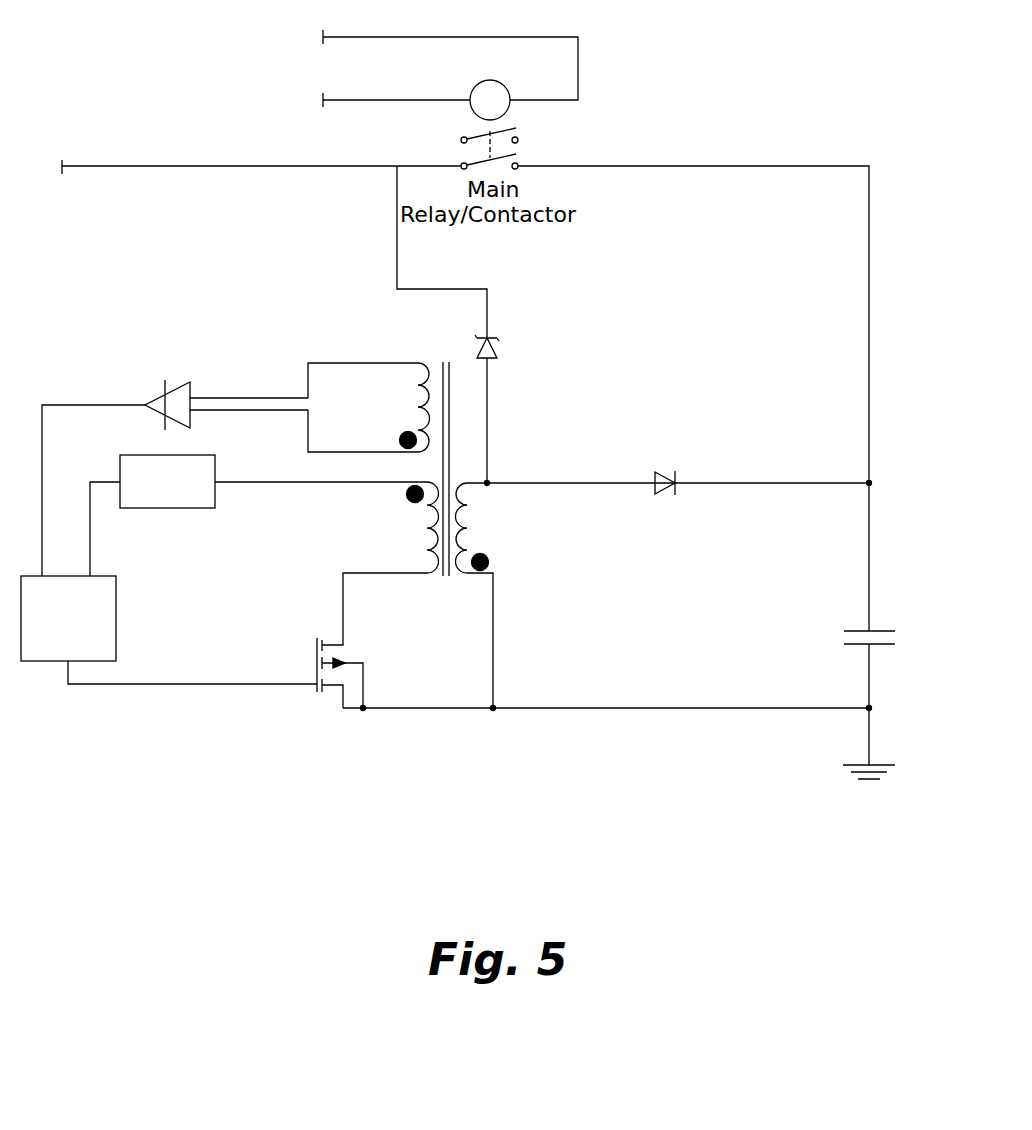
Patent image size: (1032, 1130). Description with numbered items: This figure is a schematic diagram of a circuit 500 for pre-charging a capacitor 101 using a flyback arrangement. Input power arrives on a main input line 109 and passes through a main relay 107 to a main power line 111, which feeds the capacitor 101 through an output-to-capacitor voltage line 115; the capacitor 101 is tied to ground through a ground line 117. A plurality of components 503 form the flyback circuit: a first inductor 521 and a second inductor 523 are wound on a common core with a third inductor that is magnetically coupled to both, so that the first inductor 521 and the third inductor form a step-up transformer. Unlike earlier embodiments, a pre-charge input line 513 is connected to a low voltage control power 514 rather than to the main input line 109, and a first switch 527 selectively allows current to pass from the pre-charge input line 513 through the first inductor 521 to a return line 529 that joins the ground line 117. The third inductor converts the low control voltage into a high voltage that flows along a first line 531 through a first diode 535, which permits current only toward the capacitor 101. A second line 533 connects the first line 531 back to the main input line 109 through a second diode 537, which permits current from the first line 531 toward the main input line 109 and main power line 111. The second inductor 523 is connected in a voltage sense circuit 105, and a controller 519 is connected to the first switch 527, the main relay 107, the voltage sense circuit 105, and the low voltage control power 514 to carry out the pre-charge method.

The circuit 500 is at (149, 12).
The main relay 107 is at (461, 160).
The main input line 109 is at (153, 170).
The main power line 111 is at (727, 165).
The plurality of components 503 is at (662, 326).
The second diode 537 is at (495, 352).
The second line 533 is at (489, 427).
The voltage sense circuit 105 is at (256, 356).
The second inductor 523 is at (413, 362).
The low voltage control power 514 is at (152, 515).
The pre-charge input line 513 is at (295, 485).
The first inductor 521 is at (418, 573).
The controller 519 is at (169, 630).
The first switch 527 is at (462, 487).
The first diode 535 is at (660, 492).
The first line 531 is at (780, 480).
The output-to-capacitor voltage line 115 is at (870, 597).
The capacitor 101 is at (878, 648).
The return line 529 is at (700, 710).
The ground line 117 is at (872, 765).